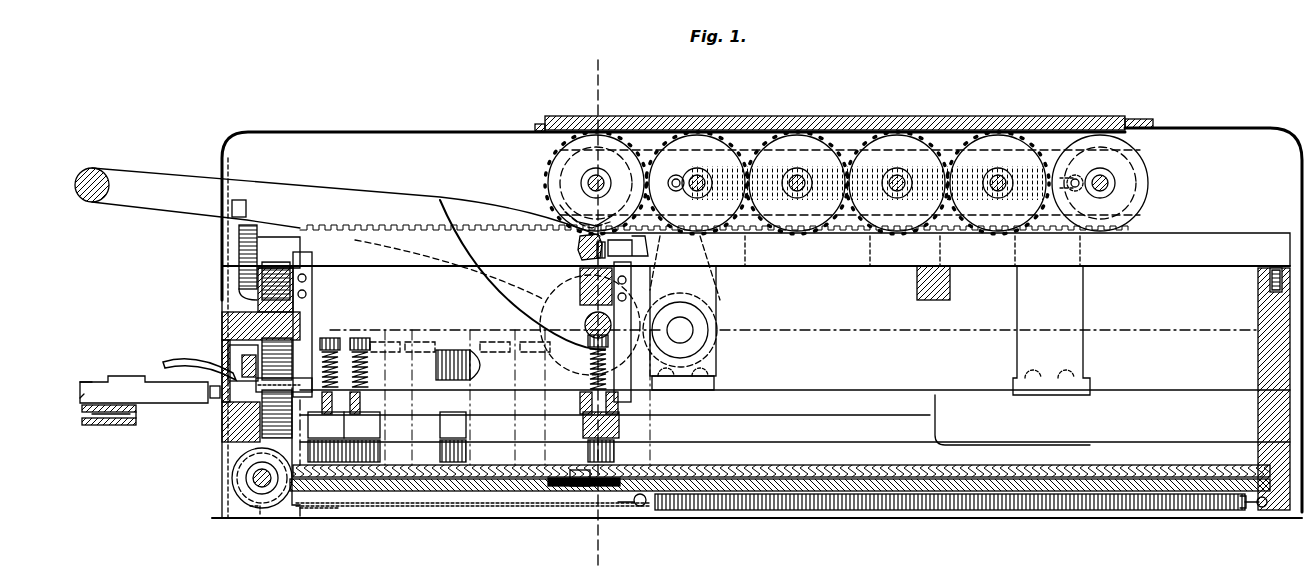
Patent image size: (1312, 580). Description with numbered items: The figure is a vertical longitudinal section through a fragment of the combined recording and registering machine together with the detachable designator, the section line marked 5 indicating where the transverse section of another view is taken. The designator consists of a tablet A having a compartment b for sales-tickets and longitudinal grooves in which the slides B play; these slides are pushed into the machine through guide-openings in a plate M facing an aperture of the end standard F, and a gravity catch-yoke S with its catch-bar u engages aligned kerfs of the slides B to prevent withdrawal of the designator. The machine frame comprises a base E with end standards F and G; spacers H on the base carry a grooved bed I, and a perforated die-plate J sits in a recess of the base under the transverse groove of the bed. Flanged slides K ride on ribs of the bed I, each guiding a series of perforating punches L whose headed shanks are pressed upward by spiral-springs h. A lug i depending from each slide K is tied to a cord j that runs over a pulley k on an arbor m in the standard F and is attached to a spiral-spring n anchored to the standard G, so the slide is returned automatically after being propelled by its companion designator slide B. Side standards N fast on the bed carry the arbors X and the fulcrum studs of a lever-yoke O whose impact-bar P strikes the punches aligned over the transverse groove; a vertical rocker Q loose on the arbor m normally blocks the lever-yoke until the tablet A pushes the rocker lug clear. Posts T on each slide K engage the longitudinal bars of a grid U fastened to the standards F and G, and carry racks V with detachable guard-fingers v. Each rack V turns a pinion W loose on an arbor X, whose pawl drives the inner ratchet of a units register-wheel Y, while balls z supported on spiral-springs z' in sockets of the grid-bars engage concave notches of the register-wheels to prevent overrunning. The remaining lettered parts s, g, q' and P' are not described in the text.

The lever-yoke O is at (340, 259).
The impact-bar P is at (252, 206).
The roller P' is at (590, 321).
The vertical rocker Q is at (240, 260).
The posts T is at (312, 304).
The plate M is at (218, 336).
The gravity catch-yoke S is at (180, 362).
The spring arm s is at (175, 348).
The finger g is at (131, 350).
The catch-bar u is at (240, 371).
The guard-fingers v is at (308, 262).
The racks V is at (355, 248).
The slides B is at (144, 389).
The tablet A is at (140, 418).
The compartment b is at (100, 428).
The stop q' is at (205, 407).
The end standard F is at (225, 440).
The pulley k is at (233, 478).
The arbor m is at (258, 482).
The lug i is at (284, 388).
The perforating punches L is at (380, 424).
The flanged slides K is at (512, 402).
The spiral-springs h is at (362, 350).
The cord j is at (362, 508).
The perforated die-plate J is at (590, 492).
The spiral-spring n is at (961, 518).
The base E is at (920, 490).
The spacers H is at (1015, 462).
The bed I is at (1120, 442).
The end standard G is at (1258, 388).
The side standards N is at (716, 292).
The grid U is at (781, 246).
The pinion W is at (633, 135).
The arbors X is at (846, 161).
The units register-wheel Y is at (995, 178).
The balls z is at (589, 210).
The spiral-springs z' is at (599, 247).
The section line 5 is at (590, 572).